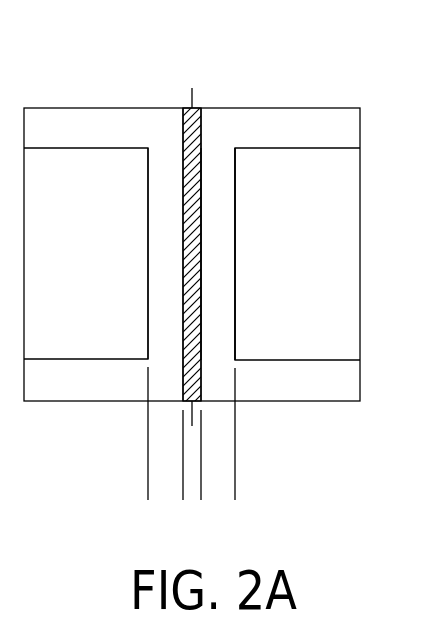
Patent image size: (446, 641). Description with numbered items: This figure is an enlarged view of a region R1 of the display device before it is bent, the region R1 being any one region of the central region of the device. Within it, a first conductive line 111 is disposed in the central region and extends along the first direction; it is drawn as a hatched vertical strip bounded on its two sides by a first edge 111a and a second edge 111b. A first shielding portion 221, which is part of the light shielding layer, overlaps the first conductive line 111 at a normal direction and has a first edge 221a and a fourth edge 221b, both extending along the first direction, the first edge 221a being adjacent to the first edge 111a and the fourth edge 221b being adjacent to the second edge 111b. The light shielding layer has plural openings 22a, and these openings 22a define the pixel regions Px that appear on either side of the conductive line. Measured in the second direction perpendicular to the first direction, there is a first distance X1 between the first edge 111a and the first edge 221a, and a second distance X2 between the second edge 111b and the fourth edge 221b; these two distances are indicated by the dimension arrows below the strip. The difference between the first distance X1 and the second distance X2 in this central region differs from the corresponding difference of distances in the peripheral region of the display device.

The first conductive line 111 is at (198, 385).
The first edge 111a is at (182, 135).
The second edge 111b is at (202, 135).
The region R1 is at (206, 91).
The first shielding portion 221 is at (218, 249).
The first edge 221a is at (150, 193).
The fourth edge 221b is at (235, 211).
The opening 22a is at (330, 360).
The pixel region Px is at (189, 273).
The first distance X1 is at (183, 492).
The second distance X2 is at (201, 492).